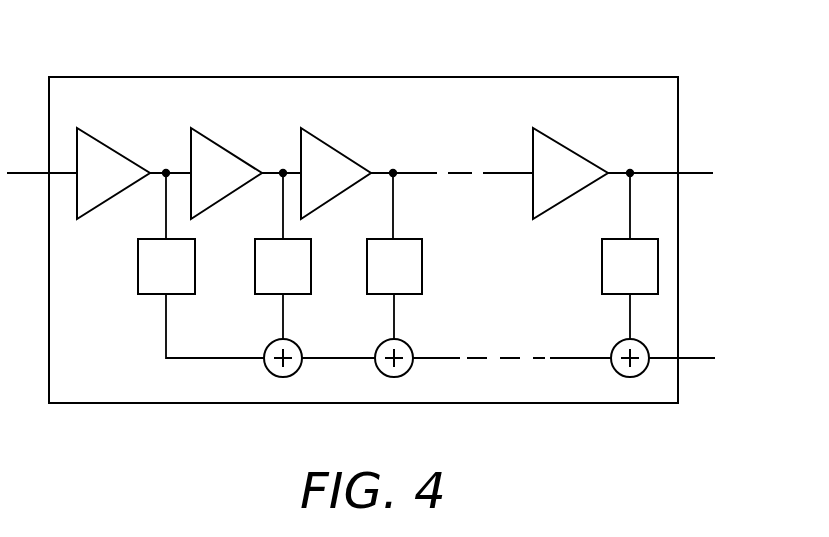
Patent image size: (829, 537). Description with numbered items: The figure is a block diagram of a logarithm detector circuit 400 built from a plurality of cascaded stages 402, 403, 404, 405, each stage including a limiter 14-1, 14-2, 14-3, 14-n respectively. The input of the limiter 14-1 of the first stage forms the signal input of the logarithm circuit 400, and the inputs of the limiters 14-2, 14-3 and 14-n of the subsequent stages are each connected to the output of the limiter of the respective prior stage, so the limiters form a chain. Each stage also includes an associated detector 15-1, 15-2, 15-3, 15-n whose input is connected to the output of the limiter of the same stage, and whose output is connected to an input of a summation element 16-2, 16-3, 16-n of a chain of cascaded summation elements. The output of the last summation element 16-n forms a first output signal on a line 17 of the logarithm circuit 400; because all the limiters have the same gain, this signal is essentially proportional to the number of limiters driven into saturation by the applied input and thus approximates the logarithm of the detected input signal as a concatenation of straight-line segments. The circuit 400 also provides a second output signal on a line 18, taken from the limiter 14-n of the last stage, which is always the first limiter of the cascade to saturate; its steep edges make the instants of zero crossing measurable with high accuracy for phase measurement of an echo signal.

The logarithm detector circuit 400 is at (541, 76).
The limiter 14-1 is at (82, 127).
The limiter 14-2 is at (196, 127).
The limiter 14-3 is at (306, 127).
The limiter 14-n is at (538, 127).
The stage 402 is at (156, 225).
The stage 403 is at (268, 225).
The stage 404 is at (374, 225).
The stage 405 is at (614, 225).
The detector 15-1 is at (150, 296).
The detector 15-2 is at (273, 296).
The detector 15-3 is at (384, 296).
The detector 15-n is at (607, 296).
The summation element 16-2 is at (272, 373).
The summation element 16-3 is at (383, 373).
The summation element 16-n is at (620, 373).
The line 18 is at (682, 171).
The line 17 is at (683, 356).